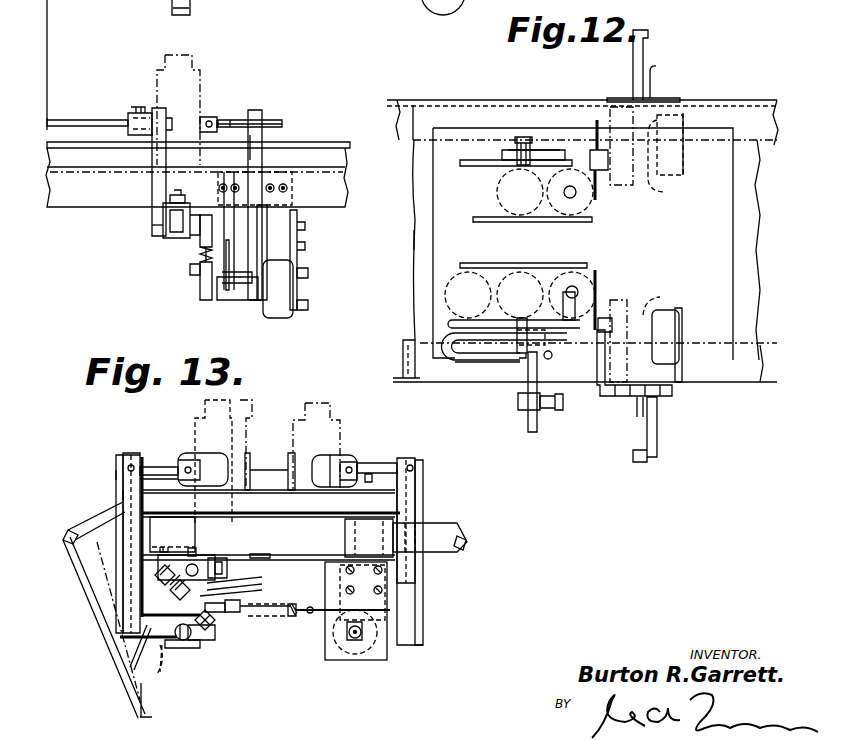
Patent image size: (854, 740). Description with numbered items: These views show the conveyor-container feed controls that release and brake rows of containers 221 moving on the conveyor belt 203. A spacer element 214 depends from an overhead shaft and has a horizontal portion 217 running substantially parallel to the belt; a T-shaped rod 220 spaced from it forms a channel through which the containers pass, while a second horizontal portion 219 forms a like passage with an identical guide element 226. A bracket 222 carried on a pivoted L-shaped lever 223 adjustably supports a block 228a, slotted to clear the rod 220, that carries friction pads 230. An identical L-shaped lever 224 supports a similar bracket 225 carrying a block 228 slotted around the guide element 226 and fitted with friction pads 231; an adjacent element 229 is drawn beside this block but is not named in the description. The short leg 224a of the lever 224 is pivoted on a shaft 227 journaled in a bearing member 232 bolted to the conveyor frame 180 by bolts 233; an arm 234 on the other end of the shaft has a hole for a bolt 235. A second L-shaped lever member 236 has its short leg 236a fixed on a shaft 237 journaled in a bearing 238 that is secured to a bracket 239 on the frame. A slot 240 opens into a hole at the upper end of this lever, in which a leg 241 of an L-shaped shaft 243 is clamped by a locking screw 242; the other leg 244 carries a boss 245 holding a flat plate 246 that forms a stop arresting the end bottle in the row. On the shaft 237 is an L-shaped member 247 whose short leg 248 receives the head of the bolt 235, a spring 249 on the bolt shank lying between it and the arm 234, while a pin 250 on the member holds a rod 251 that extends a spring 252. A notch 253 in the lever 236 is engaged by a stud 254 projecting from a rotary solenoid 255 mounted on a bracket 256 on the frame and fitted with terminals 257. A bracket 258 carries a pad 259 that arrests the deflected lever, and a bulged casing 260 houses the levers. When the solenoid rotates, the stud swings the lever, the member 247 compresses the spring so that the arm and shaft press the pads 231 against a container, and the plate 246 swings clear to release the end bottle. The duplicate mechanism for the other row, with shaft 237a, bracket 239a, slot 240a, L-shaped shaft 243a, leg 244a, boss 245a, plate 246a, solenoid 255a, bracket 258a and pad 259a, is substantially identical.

In FIG. 14, the conveyor frame 180 is at (112, 202).
In FIG. 12, the conveyor belt 203 is at (421, 232).
In FIG. 14, the spacer element 214 is at (162, 112).
In FIG. 12, the horizontal portion 217 is at (570, 222).
In FIG. 13, the horizontal portion 217 is at (288, 455).
In FIG. 12, the horizontal portion 219 is at (572, 266).
In FIG. 13, the horizontal portion 219 is at (269, 476).
In FIG. 12, the T-shaped rod 220 is at (472, 166).
In FIG. 14, the containers 221 is at (192, 73).
In FIG. 13, the containers 221 is at (244, 418).
In FIG. 12, the bracket 222 is at (548, 150).
In FIG. 13, the L-shaped lever 223 is at (423, 489).
In FIG. 12, the L-shaped lever 224 is at (547, 410).
In FIG. 13, the L-shaped lever 224 is at (115, 473).
In FIG. 13, the short leg 224a is at (172, 534).
In FIG. 14, the bracket 225 is at (93, 119).
In FIG. 12, the bracket 225 is at (462, 354).
In FIG. 14, the guide element 226 is at (49, 119).
In FIG. 12, the guide element 226 is at (458, 320).
In FIG. 14, the shaft 227 is at (152, 226).
In FIG. 13, the shaft 227 is at (199, 557).
In FIG. 12, the block 228 is at (521, 357).
In FIG. 12, the block 228a is at (517, 148).
In FIG. 14, the block 229 is at (141, 113).
In FIG. 12, the block 229 is at (522, 402).
In FIG. 12, the friction pads 230 is at (522, 168).
In FIG. 12, the friction pads 231 is at (524, 317).
In FIG. 14, the bearing member 232 is at (179, 239).
In FIG. 13, the bearing member 232 is at (242, 556).
In FIG. 14, the bolts 233 is at (179, 194).
In FIG. 13, the bolts 233 is at (264, 557).
In FIG. 13, the arm 234 is at (198, 549).
In FIG. 13, the bolt 235 is at (253, 584).
In FIG. 14, the L-shaped lever member 236 is at (262, 146).
In FIG. 12, the L-shaped lever member 236 is at (645, 305).
In FIG. 13, the L-shaped lever member 236 is at (124, 496).
In FIG. 12, the short leg 236a is at (655, 192).
In FIG. 13, the short leg 236a is at (167, 670).
In FIG. 14, the shaft 237 is at (203, 300).
In FIG. 13, the shaft 237 is at (208, 641).
In FIG. 13, the shaft 237a is at (333, 638).
In FIG. 14, the bearing 238 is at (236, 300).
In FIG. 14, the bracket 239 is at (237, 264).
In FIG. 12, the bracket 239 is at (630, 305).
In FIG. 12, the bracket 239a is at (601, 172).
In FIG. 13, the slot 240 is at (130, 453).
In FIG. 13, the slot 240a is at (413, 460).
In FIG. 14, the leg 241 is at (283, 123).
In FIG. 13, the leg 241 is at (134, 467).
In FIG. 14, the locking screw 242 is at (262, 112).
In FIG. 13, the locking screw 242 is at (118, 455).
In FIG. 14, the L-shaped shaft 243 is at (236, 120).
In FIG. 12, the L-shaped shaft 243 is at (604, 396).
In FIG. 13, the L-shaped shaft 243 is at (176, 460).
In FIG. 12, the L-shaped shaft 243a is at (597, 128).
In FIG. 13, the L-shaped shaft 243a is at (393, 475).
In FIG. 14, the leg 244 is at (237, 117).
In FIG. 13, the leg 244 is at (180, 484).
In FIG. 13, the leg 244a is at (382, 478).
In FIG. 14, the boss 245 is at (212, 132).
In FIG. 13, the boss 245 is at (203, 469).
In FIG. 13, the boss 245a is at (334, 471).
In FIG. 14, the flat plate 246 is at (207, 116).
In FIG. 12, the flat plate 246 is at (598, 292).
In FIG. 13, the flat plate 246 is at (205, 454).
In FIG. 12, the flat plate 246a is at (597, 200).
In FIG. 13, the flat plate 246a is at (338, 455).
In FIG. 14, the L-shaped member 247 is at (200, 276).
In FIG. 13, the L-shaped member 247 is at (188, 648).
In FIG. 13, the short leg 248 is at (222, 626).
In FIG. 13, the spring 249 is at (238, 579).
In FIG. 13, the pin 250 is at (189, 604).
In FIG. 13, the rod 251 is at (264, 598).
In FIG. 13, the spring 252 is at (292, 615).
In FIG. 13, the notch 253 is at (142, 655).
In FIG. 14, the stud 254 is at (264, 262).
In FIG. 12, the stud 254 is at (683, 348).
In FIG. 13, the stud 254 is at (140, 641).
In FIG. 14, the rotary solenoid 255 is at (284, 296).
In FIG. 12, the rotary solenoid 255 is at (682, 312).
In FIG. 13, the rotary solenoid 255 is at (201, 655).
In FIG. 12, the rotary solenoid 255a is at (683, 176).
In FIG. 13, the rotary solenoid 255a is at (353, 664).
In FIG. 14, the bracket 256 is at (299, 231).
In FIG. 14, the terminals 257 is at (310, 305).
In FIG. 12, the bracket 258 is at (657, 437).
In FIG. 13, the bracket 258 is at (98, 524).
In FIG. 12, the bracket 258a is at (647, 74).
In FIG. 13, the bracket 258a is at (432, 524).
In FIG. 12, the pad 259 is at (640, 459).
In FIG. 13, the pad 259 is at (78, 546).
In FIG. 12, the pad 259a is at (650, 34).
In FIG. 13, the pad 259a is at (470, 540).
In FIG. 13, the bulged casing 260 is at (85, 602).